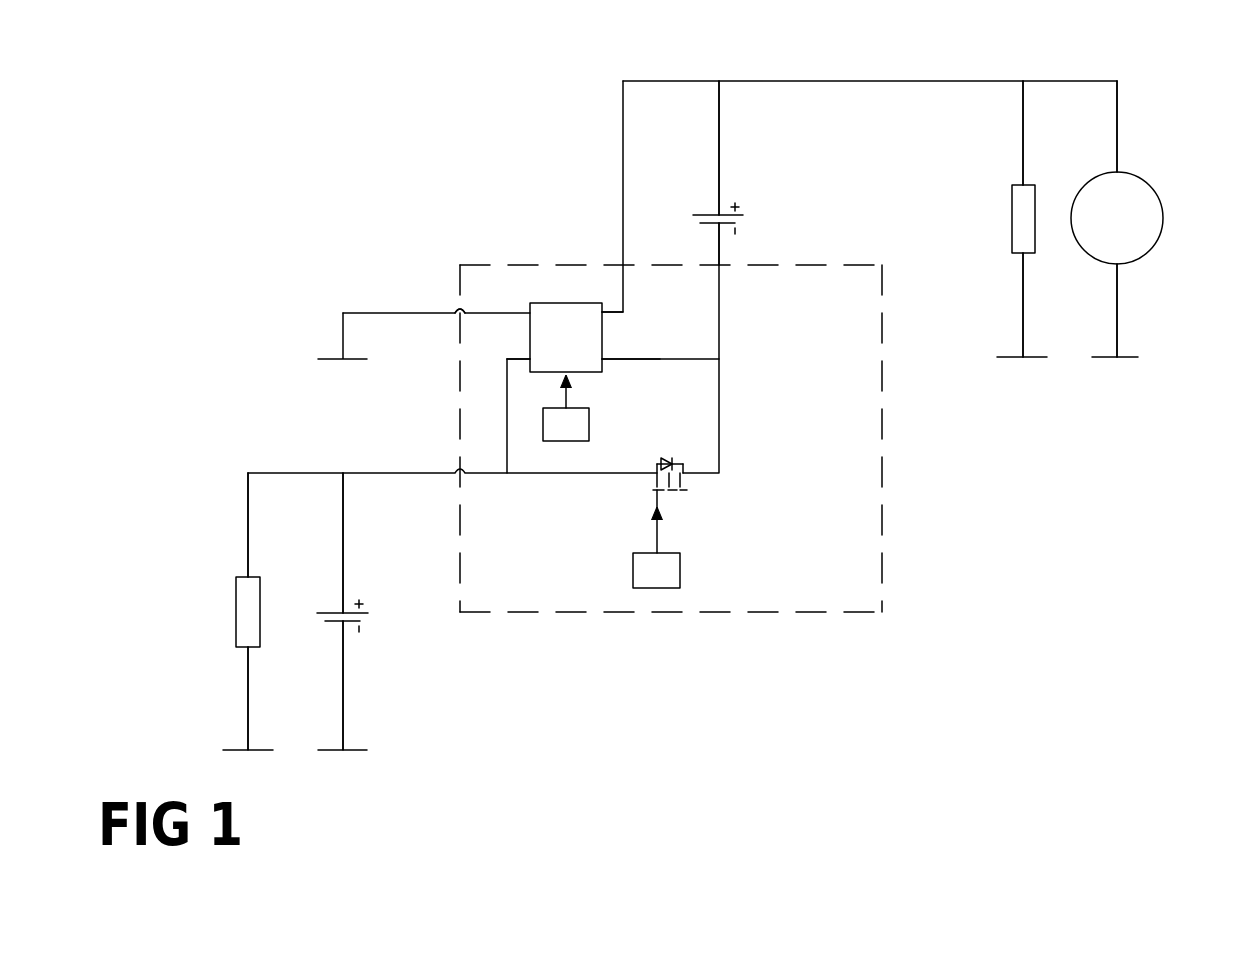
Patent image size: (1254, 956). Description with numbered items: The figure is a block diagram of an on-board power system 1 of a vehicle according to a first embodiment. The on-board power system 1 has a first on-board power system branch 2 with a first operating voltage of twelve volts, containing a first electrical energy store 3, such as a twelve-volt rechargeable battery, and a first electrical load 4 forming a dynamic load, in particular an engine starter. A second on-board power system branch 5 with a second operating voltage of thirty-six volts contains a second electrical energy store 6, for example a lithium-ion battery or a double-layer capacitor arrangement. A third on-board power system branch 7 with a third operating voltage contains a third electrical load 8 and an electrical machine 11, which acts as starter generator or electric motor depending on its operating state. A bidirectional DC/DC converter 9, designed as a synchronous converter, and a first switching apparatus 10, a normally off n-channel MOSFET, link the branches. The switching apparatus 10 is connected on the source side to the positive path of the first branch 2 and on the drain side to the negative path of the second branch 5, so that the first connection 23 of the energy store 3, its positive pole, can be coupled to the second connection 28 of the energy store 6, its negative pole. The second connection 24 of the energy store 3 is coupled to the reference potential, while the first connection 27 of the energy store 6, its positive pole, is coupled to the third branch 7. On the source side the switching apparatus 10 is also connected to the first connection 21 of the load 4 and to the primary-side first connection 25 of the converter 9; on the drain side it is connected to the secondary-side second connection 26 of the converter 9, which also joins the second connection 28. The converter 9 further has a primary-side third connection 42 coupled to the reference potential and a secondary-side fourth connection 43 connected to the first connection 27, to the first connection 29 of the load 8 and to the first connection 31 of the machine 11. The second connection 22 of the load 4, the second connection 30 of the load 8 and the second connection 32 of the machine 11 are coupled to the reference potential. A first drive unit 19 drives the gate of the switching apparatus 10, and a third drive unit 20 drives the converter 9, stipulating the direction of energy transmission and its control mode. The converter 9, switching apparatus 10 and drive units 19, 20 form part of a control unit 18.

The on-board power system 1 is at (252, 150).
The first on-board power system branch 2 is at (225, 415).
The first electrical energy store 3 is at (382, 626).
The first electrical load 4 is at (236, 612).
The second on-board power system branch 5 is at (780, 147).
The second electrical energy store 6 is at (755, 216).
The third on-board power system branch 7 is at (974, 332).
The third electrical load 8 is at (1012, 216).
The DC/DC converter 9 is at (560, 335).
The first switching apparatus 10 is at (700, 488).
The electrical machine 11 is at (1151, 218).
The control unit 18 is at (845, 577).
The first drive unit 19 is at (633, 572).
The third drive unit 20 is at (589, 426).
The first connection of the first electrical load 21 is at (222, 559).
The second connection of the first electrical load 22 is at (232, 666).
The first connection of the first electrical energy store 23 is at (362, 580).
The second connection of the first electrical energy store 24 is at (330, 642).
The first connection of the DC/DC converter 25 is at (511, 352).
The second connection of the DC/DC converter 26 is at (617, 372).
The first connection of the second electrical energy store 27 is at (693, 199).
The second connection of the second electrical energy store 28 is at (731, 242).
The first connection of the third electrical load 29 is at (990, 171).
The second connection of the third electrical load 30 is at (1006, 273).
The first connection of the electrical machine 31 is at (1132, 159).
The second connection of the electrical machine 32 is at (1132, 276).
The third connection of the DC/DC converter 42 is at (506, 299).
The fourth connection of the DC/DC converter 43 is at (617, 320).